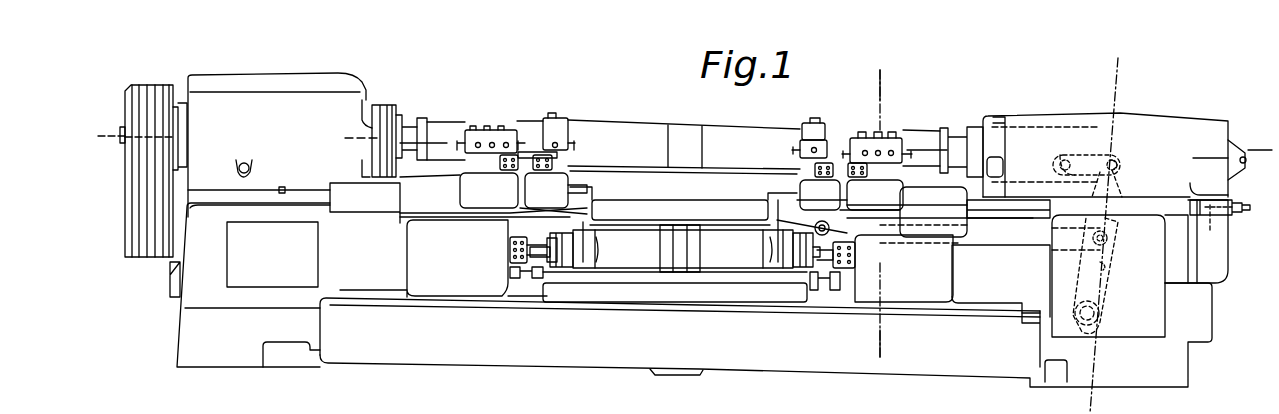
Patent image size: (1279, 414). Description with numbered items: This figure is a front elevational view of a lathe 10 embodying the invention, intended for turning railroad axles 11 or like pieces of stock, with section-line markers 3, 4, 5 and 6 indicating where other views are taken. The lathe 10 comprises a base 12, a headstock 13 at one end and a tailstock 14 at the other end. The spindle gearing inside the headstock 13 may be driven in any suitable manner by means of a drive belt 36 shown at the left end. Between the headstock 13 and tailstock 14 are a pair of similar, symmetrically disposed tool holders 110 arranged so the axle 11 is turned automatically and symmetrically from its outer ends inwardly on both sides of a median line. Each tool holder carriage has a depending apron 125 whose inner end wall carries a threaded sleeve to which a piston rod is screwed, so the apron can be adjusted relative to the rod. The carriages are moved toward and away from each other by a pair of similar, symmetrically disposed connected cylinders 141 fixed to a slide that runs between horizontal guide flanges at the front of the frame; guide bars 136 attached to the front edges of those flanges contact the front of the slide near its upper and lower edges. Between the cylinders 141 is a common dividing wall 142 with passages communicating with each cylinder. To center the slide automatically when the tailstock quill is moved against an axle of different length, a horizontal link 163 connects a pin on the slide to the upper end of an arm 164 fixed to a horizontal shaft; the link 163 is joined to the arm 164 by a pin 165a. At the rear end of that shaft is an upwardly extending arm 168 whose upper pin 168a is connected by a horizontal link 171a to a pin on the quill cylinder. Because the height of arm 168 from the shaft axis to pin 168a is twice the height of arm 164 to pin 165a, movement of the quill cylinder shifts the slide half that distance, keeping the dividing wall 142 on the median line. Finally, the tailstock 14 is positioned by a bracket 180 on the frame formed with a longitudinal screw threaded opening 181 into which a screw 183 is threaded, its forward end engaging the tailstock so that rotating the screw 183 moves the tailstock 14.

The lathe 10 is at (549, 98).
The railroad axle 11 is at (679, 112).
The base 12 is at (163, 339).
The headstock 13 is at (299, 102).
The tailstock 14 is at (1158, 130).
The drive belt 36 is at (150, 93).
The tool holder 110 is at (492, 110).
The apron 125 is at (437, 275).
The guide bar 136 is at (710, 195).
The connected cylinder 141 is at (622, 263).
The common dividing wall 142 is at (683, 265).
The horizontal link 163 is at (1007, 238).
The arm 164 is at (1112, 270).
The pin 165a is at (1112, 235).
The upwardly extending arm 168 is at (1120, 188).
The pin 168a is at (1142, 149).
The horizontal link 171a is at (1090, 156).
The bracket 180 is at (1223, 255).
The screw threaded opening 181 is at (1218, 223).
The screw 183 is at (1258, 196).
The section line 3- 3 is at (926, 141).
The section line 4- 4 is at (1113, 72).
The section line 5- 5 is at (110, 128).
The section line 6- 6 is at (870, 92).